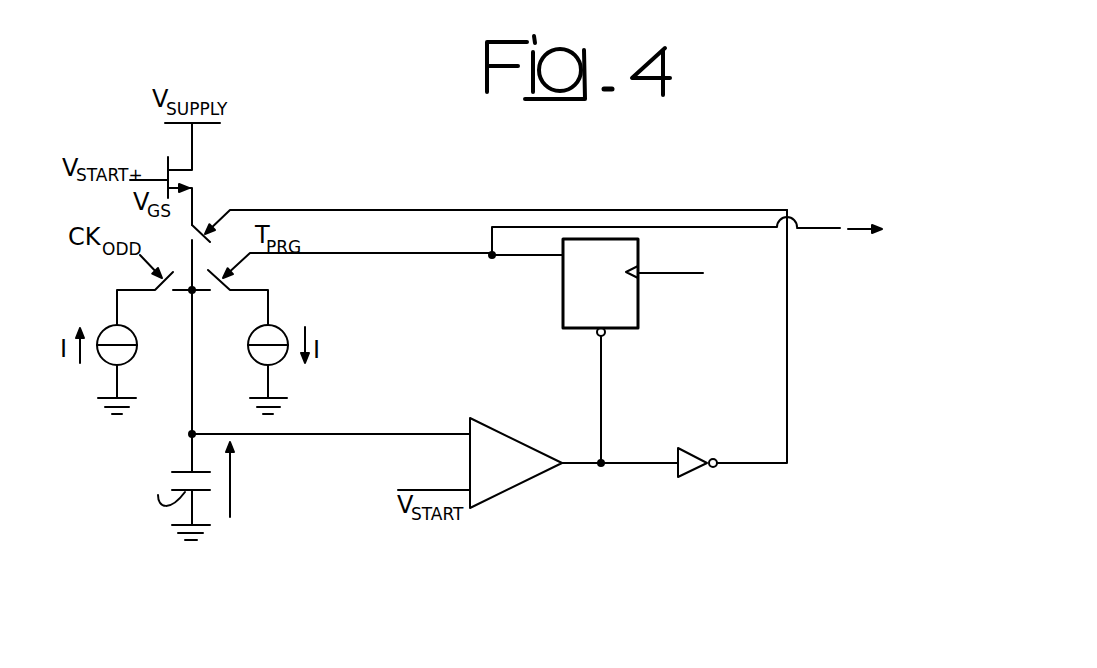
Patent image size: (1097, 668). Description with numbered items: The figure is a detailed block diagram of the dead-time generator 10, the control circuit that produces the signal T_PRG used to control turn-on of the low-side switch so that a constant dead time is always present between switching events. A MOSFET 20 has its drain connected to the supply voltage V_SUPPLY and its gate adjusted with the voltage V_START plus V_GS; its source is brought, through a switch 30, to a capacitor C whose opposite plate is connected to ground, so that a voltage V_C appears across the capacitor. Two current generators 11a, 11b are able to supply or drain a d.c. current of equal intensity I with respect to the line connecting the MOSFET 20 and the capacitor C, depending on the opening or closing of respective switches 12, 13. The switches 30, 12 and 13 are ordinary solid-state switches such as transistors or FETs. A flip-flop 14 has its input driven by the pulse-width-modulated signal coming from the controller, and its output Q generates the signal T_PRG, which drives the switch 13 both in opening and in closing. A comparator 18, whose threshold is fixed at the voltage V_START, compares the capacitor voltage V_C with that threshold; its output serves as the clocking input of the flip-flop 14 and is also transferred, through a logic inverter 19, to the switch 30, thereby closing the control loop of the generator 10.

The dead-time generator 10 is at (261, 522).
The current generator 11a is at (135, 355).
The current generator 11b is at (278, 357).
The switch 12 is at (137, 292).
The switch 13 is at (243, 297).
The flip-flop 14 is at (630, 308).
The comparator 18 is at (527, 473).
The logic inverter 19 is at (693, 468).
The MOSFET 20 is at (163, 151).
The switch 30 is at (220, 207).